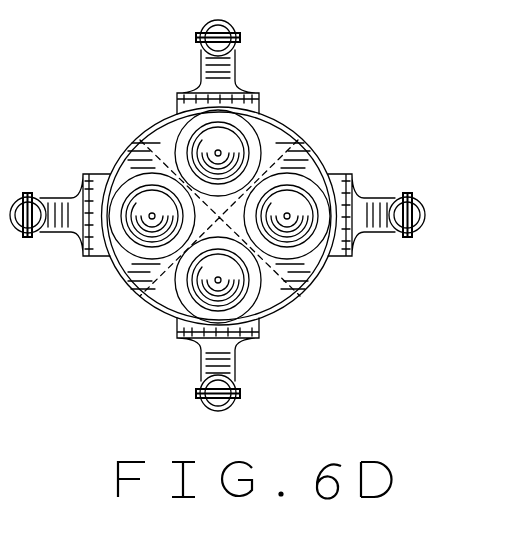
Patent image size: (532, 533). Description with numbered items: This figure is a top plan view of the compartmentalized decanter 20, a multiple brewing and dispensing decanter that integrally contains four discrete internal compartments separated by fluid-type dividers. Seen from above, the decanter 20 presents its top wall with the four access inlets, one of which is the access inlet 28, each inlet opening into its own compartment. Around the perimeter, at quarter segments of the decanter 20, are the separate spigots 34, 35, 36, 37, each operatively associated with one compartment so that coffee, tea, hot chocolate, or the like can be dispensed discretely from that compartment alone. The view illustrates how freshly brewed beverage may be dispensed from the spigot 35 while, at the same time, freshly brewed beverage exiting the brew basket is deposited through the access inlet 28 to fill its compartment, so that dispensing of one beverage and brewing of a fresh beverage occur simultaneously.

The decanter 20 is at (313, 143).
The access inlet 28 is at (255, 130).
The spigot 34 is at (37, 233).
The spigot 35 is at (240, 365).
The spigot 36 is at (382, 197).
The spigot 37 is at (236, 50).